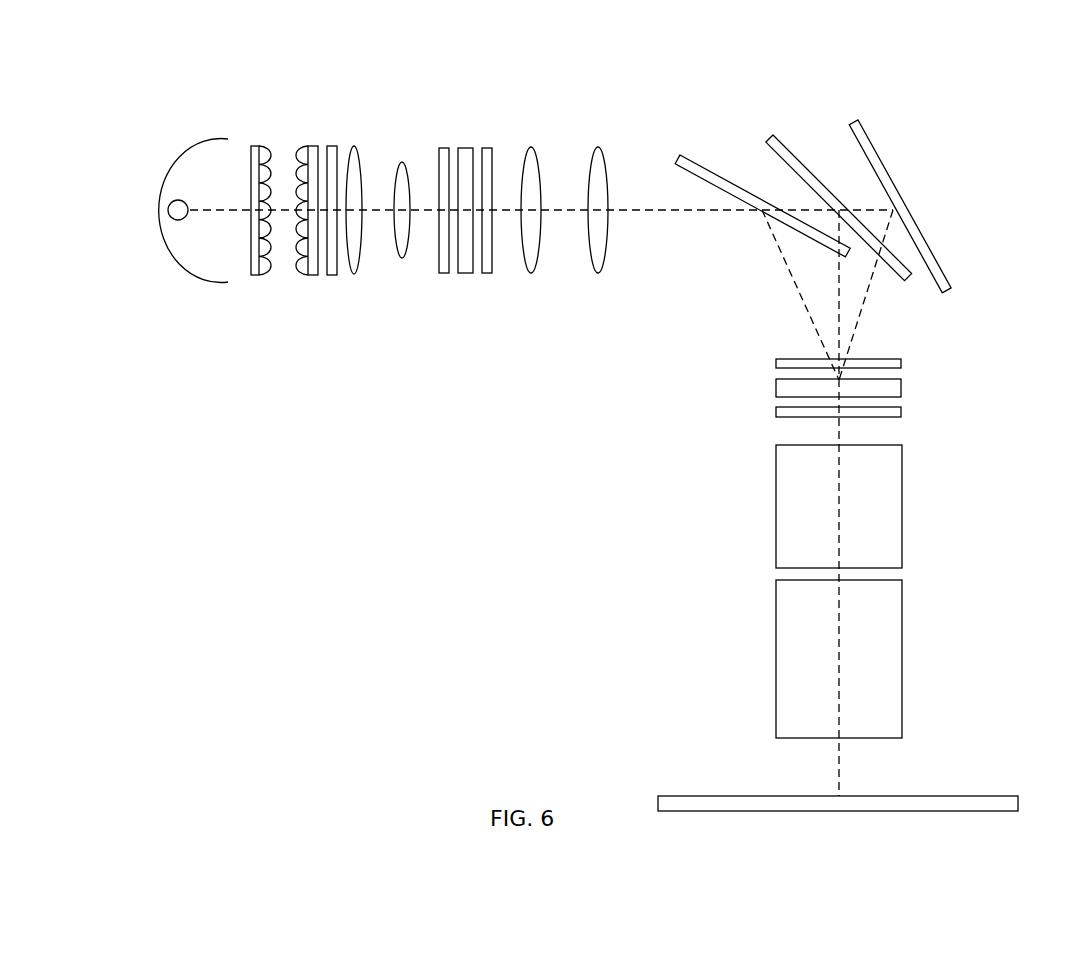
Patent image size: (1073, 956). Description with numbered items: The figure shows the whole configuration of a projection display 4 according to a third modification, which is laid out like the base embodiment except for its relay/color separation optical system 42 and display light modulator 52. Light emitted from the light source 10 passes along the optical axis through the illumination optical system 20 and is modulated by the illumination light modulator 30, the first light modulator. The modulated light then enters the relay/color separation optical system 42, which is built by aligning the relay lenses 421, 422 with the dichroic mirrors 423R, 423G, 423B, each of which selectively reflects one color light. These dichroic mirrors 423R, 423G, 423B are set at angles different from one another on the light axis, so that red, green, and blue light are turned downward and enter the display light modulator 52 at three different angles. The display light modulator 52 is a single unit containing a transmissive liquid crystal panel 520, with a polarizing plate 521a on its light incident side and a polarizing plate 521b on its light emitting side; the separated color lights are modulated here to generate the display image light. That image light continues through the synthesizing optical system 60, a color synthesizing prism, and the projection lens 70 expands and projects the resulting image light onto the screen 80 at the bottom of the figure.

The projection display 4 is at (435, 563).
The light source 10 is at (197, 135).
The illumination optical system 20 is at (409, 123).
The illumination light modulator 30 is at (492, 124).
The relay/color separation optical system 42 is at (943, 59).
The relay lens 421 is at (530, 146).
The relay lens 422 is at (598, 146).
The dichroic mirror 423R is at (681, 154).
The dichroic mirror 423G is at (772, 135).
The dichroic mirror 423B is at (853, 120).
The display light modulator 52 is at (983, 355).
The polarizing plate 521a is at (903, 363).
The transmissive liquid crystal panel 520 is at (903, 387).
The polarizing plate 521b is at (903, 411).
The synthesizing optical system 60 is at (903, 505).
The projection lens 70 is at (903, 655).
The screen 80 is at (1020, 802).